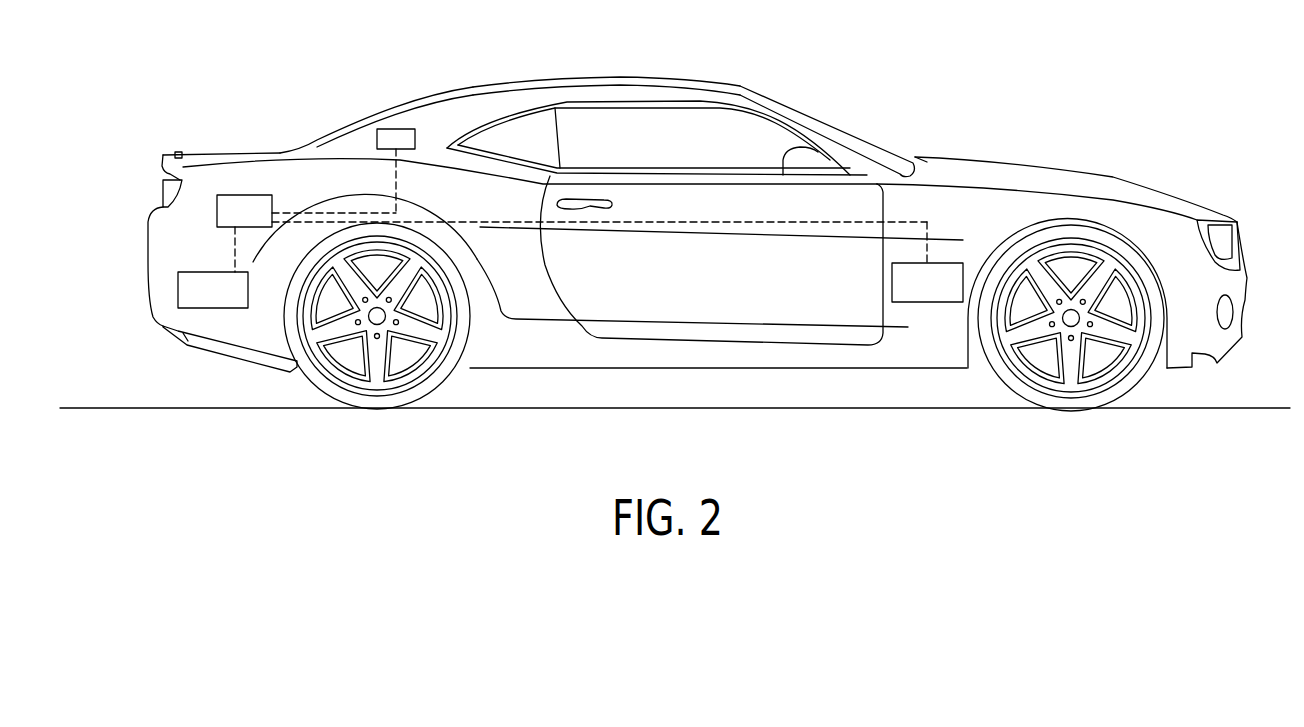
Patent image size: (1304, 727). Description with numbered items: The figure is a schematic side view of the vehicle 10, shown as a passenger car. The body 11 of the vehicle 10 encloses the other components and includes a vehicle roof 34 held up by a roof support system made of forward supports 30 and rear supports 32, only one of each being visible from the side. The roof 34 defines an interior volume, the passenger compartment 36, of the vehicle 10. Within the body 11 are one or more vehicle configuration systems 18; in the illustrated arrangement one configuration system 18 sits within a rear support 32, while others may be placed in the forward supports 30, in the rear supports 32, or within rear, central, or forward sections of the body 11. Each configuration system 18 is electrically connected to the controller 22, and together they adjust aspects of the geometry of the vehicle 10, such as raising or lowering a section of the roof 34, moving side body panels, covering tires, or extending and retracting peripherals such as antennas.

The vehicle 10 is at (878, 100).
The body 11 is at (968, 212).
The vehicle configuration system 18 is at (380, 130).
The controller 22 is at (253, 225).
The forward supports 30 is at (790, 122).
The rear supports 32 is at (450, 117).
The vehicle roof 34 is at (593, 83).
The passenger compartment 36 is at (723, 130).